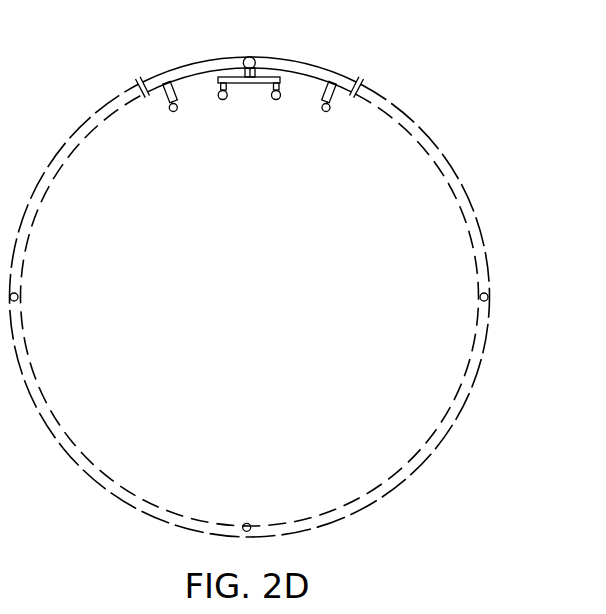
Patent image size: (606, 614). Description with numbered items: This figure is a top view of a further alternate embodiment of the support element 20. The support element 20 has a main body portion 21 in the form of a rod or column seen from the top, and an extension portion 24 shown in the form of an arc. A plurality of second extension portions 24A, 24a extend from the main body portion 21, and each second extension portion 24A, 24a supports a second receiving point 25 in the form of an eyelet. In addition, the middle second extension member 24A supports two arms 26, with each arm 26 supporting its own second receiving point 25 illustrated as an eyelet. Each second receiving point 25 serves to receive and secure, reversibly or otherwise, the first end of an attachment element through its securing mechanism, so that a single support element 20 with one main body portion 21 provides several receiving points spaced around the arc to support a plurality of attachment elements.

The support element 20 is at (341, 62).
The main body portion 21 is at (172, 73).
The extension portion 24 is at (249, 84).
The second extension portion 24A is at (256, 76).
The second extension portion 24a is at (163, 100).
The second receiving point 25 is at (174, 112).
The arm 26 is at (283, 86).